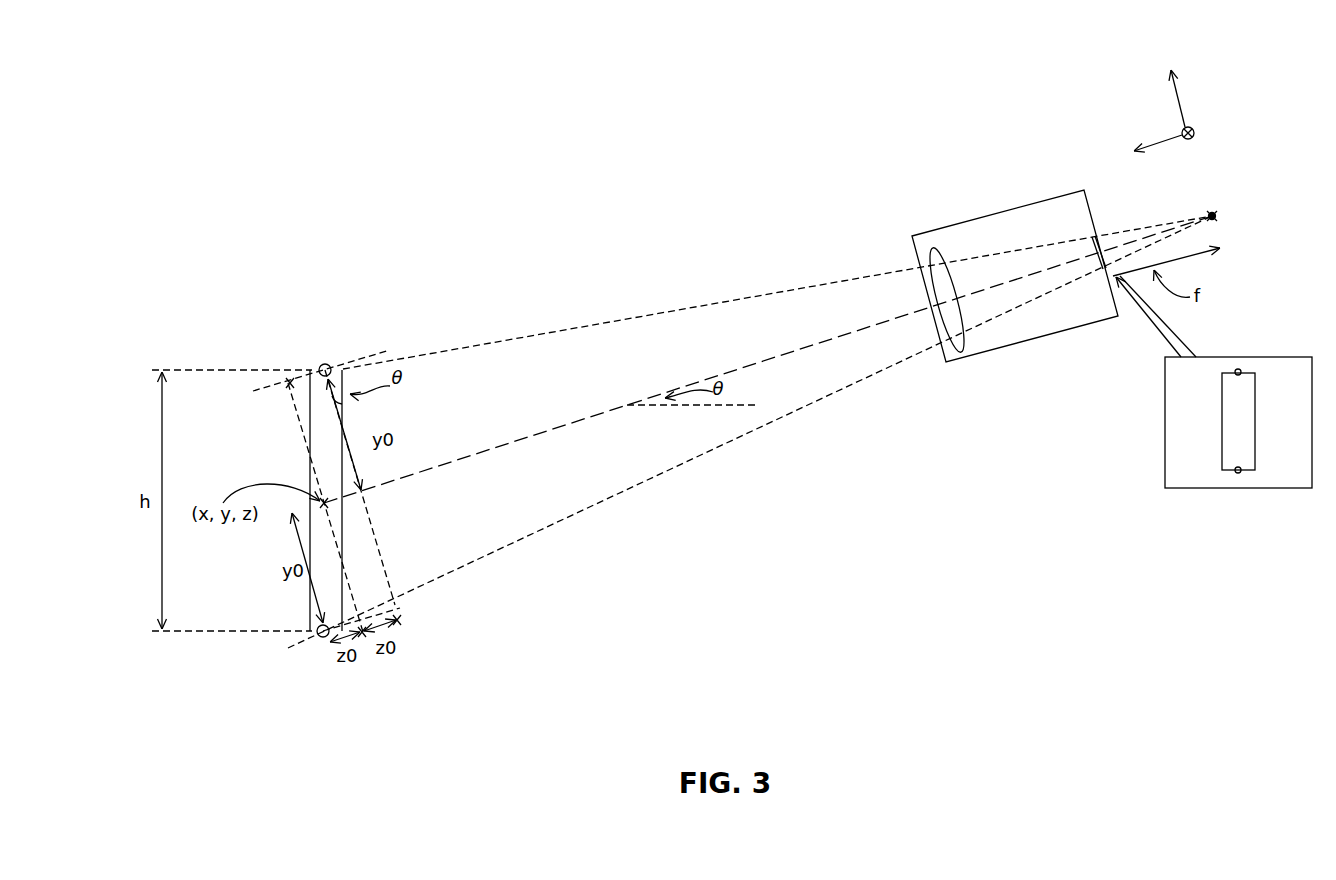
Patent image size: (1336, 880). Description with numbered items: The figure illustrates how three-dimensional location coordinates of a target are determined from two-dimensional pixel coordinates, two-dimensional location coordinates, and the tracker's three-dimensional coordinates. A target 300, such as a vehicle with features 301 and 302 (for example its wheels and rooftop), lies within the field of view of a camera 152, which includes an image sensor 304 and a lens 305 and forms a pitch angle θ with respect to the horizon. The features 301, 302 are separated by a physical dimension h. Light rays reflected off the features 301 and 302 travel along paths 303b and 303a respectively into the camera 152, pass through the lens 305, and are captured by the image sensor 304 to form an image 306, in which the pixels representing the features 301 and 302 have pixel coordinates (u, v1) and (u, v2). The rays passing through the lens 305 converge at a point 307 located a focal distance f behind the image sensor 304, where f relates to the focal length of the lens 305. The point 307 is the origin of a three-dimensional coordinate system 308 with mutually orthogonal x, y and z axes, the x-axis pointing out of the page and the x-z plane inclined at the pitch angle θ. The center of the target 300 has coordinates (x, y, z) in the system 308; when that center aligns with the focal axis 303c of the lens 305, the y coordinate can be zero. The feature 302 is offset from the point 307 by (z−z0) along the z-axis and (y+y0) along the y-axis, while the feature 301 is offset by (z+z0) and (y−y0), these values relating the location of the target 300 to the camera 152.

The target 300 is at (308, 494).
The feature 301 is at (318, 638).
The feature 302 is at (323, 362).
The path 303a is at (666, 312).
The path 303b is at (659, 478).
The focal axis 303c is at (586, 418).
The image sensor 304 is at (1099, 236).
The lens 305 is at (962, 353).
The camera 152 is at (1010, 348).
The image 306 is at (1165, 490).
The point 307 is at (1217, 213).
The three-dimensional coordinate system 308 is at (1217, 62).